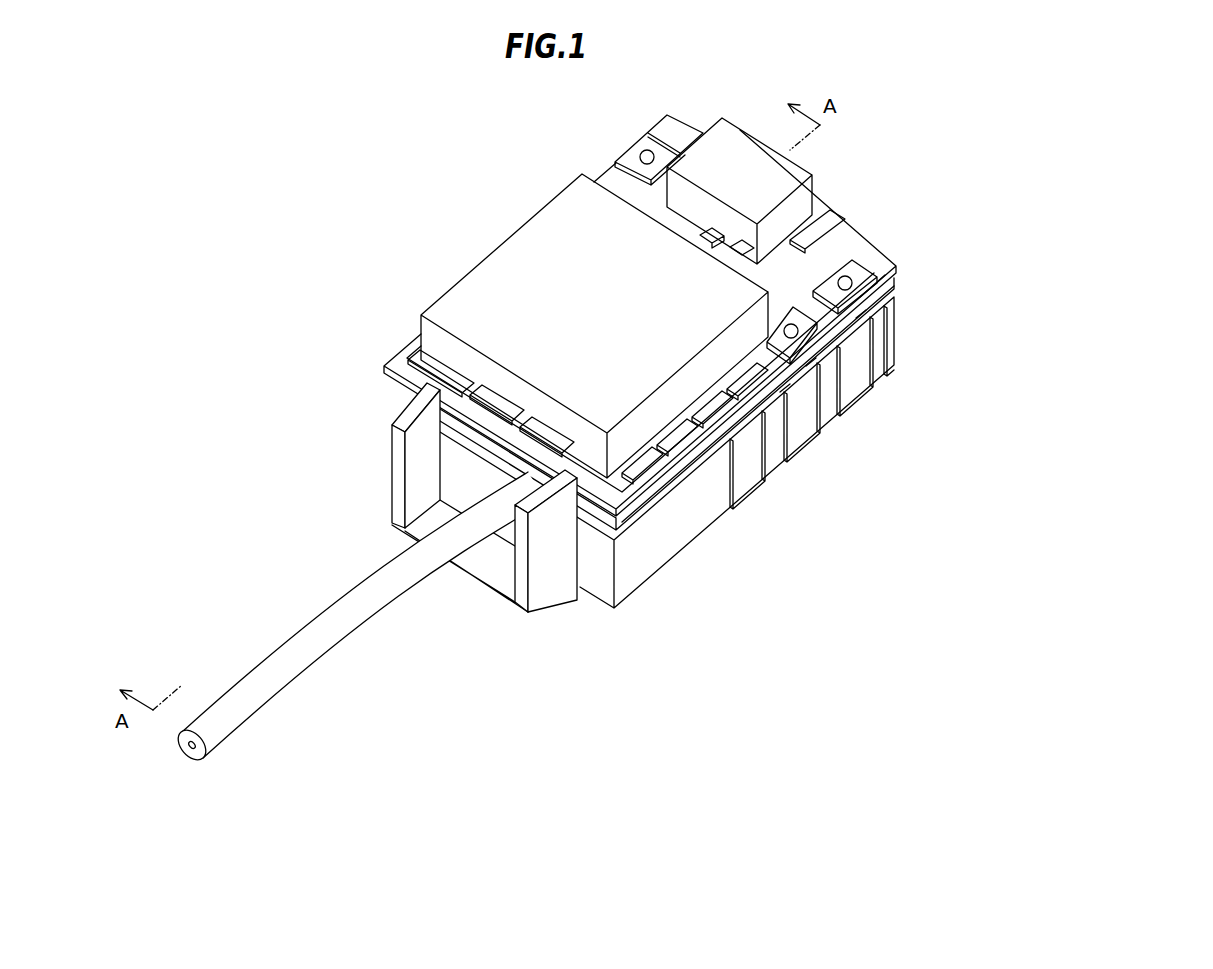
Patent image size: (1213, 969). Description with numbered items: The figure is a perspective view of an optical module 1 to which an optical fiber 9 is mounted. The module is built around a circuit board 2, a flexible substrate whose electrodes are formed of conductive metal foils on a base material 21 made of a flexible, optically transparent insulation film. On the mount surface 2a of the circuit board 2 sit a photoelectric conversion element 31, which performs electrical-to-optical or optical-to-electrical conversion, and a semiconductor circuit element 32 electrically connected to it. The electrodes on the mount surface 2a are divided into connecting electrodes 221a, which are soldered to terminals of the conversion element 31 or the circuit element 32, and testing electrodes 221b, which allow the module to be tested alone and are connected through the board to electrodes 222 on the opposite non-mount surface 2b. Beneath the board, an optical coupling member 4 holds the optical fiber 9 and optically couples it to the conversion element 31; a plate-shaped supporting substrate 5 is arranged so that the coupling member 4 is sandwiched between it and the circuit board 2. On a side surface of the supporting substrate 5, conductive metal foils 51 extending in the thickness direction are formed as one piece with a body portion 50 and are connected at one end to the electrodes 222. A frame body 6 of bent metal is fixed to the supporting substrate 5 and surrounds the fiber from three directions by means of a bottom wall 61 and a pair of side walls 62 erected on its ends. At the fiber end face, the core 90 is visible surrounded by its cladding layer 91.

The optical module 1 is at (520, 129).
The circuit board 2 is at (918, 277).
The mount surface 2a is at (885, 265).
The non-mount surface 2b is at (890, 288).
The base material 21 is at (680, 133).
The photoelectric conversion element 31 is at (740, 160).
The semiconductor circuit element 32 is at (515, 265).
The connecting electrodes 221a is at (815, 243).
The testing electrodes 221b is at (803, 318).
The electrodes 222 is at (786, 396).
The optical coupling member 4 is at (593, 507).
The supporting substrate 5 is at (893, 462).
The body portion 50 is at (682, 525).
The metal foils 51 is at (847, 397).
The frame body 6 is at (380, 428).
The bottom wall 61 is at (467, 570).
The side walls 62 is at (393, 483).
The optical fiber 9 is at (308, 633).
The core 90 is at (188, 748).
The cladding layer 91 is at (180, 738).